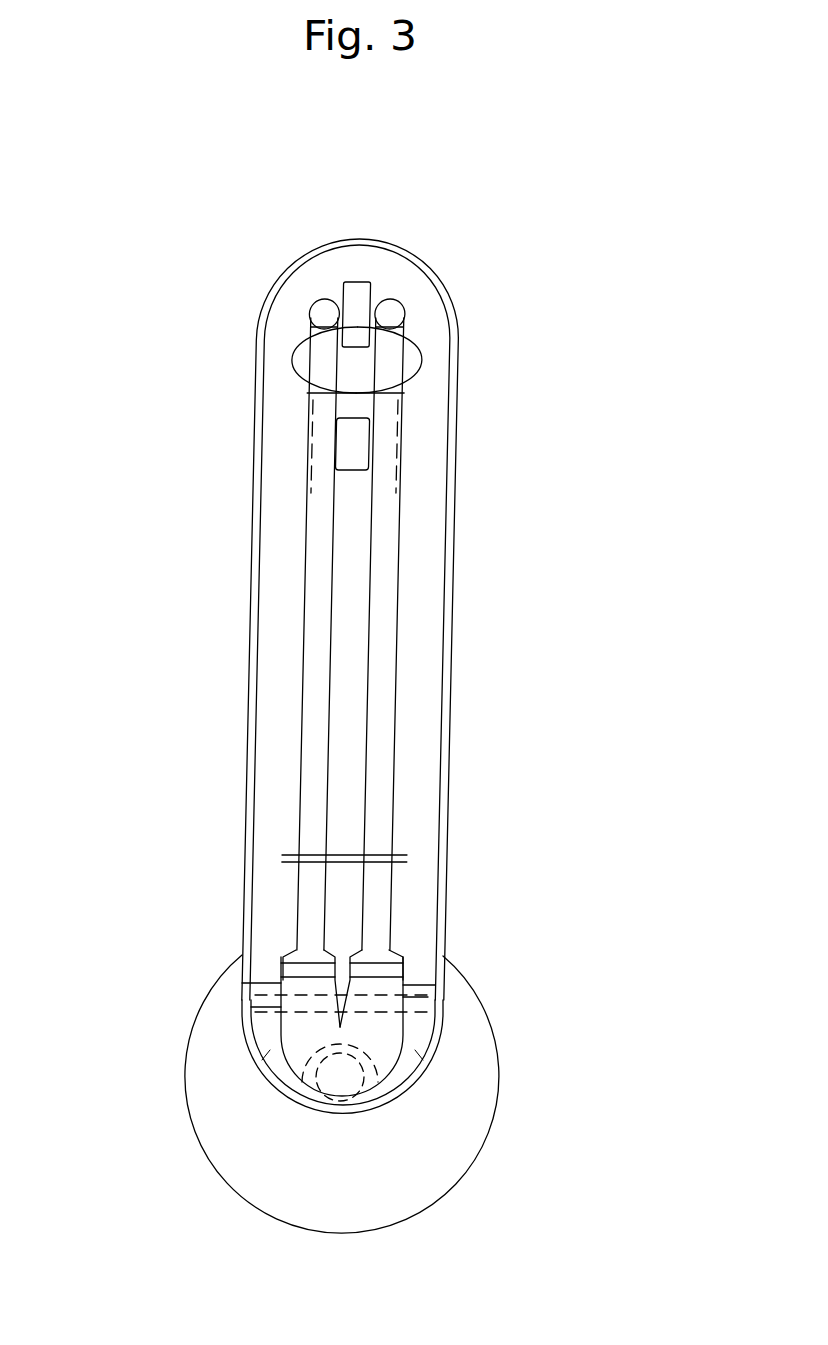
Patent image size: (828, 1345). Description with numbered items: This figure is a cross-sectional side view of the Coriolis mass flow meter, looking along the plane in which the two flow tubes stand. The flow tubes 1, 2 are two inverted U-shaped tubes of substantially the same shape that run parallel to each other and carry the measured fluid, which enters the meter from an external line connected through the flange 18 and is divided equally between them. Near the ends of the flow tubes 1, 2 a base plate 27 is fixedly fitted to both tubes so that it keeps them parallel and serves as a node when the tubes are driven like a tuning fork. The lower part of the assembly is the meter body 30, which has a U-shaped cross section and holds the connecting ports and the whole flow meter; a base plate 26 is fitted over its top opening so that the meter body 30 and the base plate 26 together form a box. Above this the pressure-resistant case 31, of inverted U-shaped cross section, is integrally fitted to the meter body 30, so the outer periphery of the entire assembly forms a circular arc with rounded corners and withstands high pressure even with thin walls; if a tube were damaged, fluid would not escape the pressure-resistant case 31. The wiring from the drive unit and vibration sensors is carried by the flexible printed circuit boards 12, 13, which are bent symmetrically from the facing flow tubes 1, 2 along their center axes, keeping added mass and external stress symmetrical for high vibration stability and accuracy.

The flow tube 1 is at (312, 693).
The flow tube 2 is at (380, 720).
The flexible printed circuit board 12 is at (293, 358).
The flexible printed circuit board 13 is at (420, 362).
The flange 18 is at (435, 1150).
The base plate 26 is at (412, 990).
The base plate 27 is at (395, 855).
The meter body 30 is at (430, 1053).
The pressure-resistant case 31 is at (448, 745).